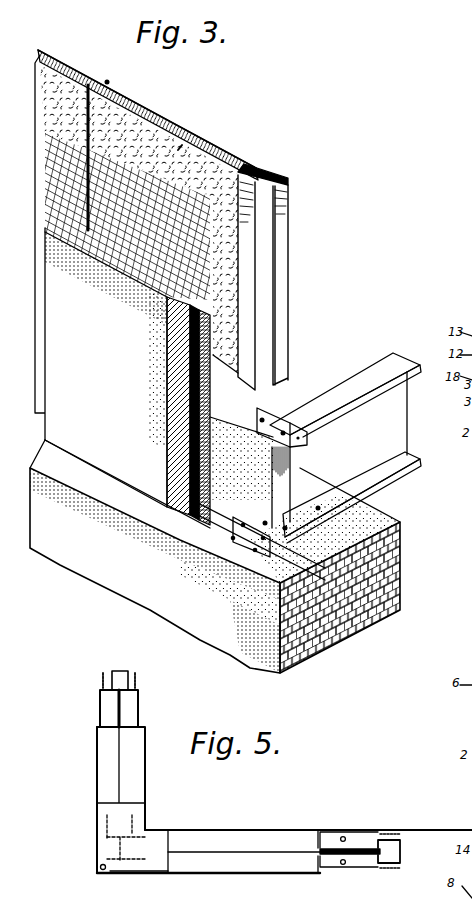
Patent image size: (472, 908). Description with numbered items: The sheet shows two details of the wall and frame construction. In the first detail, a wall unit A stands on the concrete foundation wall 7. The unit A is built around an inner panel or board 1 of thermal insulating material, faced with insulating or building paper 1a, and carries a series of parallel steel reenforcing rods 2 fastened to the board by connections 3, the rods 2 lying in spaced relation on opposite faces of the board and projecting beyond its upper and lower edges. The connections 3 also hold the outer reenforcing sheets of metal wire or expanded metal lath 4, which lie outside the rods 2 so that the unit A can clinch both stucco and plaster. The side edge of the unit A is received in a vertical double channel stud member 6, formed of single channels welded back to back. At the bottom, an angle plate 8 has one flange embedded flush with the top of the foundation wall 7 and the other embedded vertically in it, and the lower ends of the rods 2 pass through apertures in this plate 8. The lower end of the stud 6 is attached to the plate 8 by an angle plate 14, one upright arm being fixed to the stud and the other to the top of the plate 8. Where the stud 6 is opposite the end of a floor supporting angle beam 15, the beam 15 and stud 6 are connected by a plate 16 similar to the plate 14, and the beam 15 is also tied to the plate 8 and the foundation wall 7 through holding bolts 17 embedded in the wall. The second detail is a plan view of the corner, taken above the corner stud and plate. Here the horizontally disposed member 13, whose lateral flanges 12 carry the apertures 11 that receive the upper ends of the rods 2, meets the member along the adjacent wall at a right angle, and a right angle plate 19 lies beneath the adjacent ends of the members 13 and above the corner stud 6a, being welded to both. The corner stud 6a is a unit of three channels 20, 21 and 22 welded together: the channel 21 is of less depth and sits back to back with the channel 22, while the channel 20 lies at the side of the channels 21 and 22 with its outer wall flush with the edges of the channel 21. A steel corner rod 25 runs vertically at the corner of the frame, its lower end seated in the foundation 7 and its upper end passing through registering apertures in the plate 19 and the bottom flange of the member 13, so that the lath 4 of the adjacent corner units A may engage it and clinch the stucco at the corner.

In FIG. 3, the inner panel or board 1 is at (150, 160).
In FIG. 5, the inner panel or board 1 is at (118, 672).
In FIG. 3, the insulating or building paper 1a is at (62, 58).
In FIG. 5, the insulating or building paper 1a is at (126, 672).
In FIG. 3, the steel reenforcing rods 2 is at (108, 82).
In FIG. 5, the steel reenforcing rods 2 is at (343, 837).
In FIG. 3, the connections 3 is at (97, 157).
In FIG. 3, the reenforcing sheets of metal wire or expanded metal lath 4 is at (178, 148).
In FIG. 5, the reenforcing sheets of metal wire or expanded metal lath 4 is at (140, 687).
In FIG. 3, the double channel or stud members 6 is at (280, 243).
In FIG. 3, the concrete foundation wall 7 is at (377, 620).
In FIG. 3, the angle plate 8 is at (247, 563).
In FIG. 5, the apertures 11 is at (356, 832).
In FIG. 5, the lateral flanges 12 is at (333, 832).
In FIG. 5, the horizontally disposed member 13 is at (272, 838).
In FIG. 3, the angle plate 14 is at (235, 565).
In FIG. 3, the floor supporting angle beams 15 is at (380, 463).
In FIG. 3, the plate 16 is at (273, 422).
In FIG. 3, the holding bolts 17 is at (286, 527).
In FIG. 5, the right angle plate 19 is at (163, 830).
In FIG. 5, the channel 20 is at (105, 823).
In FIG. 5, the channel 21 is at (105, 862).
In FIG. 5, the channel 22 is at (128, 875).
In FIG. 5, the steel corner rod 25 is at (108, 874).
In FIG. 5, the corner stud 6a is at (116, 844).
In FIG. 3, the unit A is at (216, 174).
In FIG. 5, the unit A is at (388, 865).